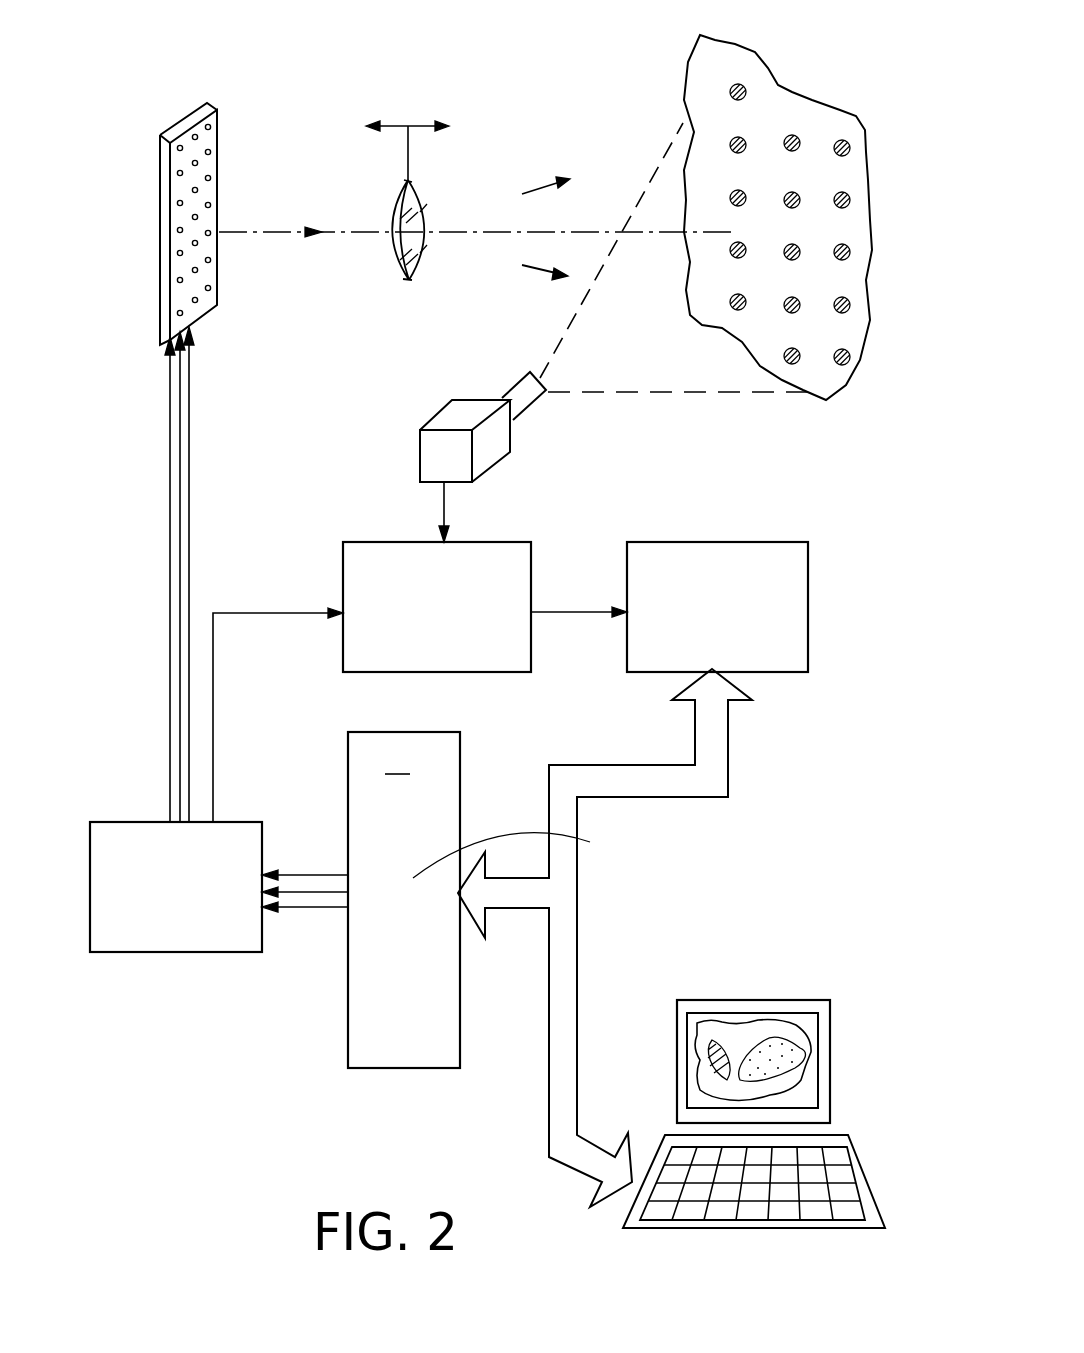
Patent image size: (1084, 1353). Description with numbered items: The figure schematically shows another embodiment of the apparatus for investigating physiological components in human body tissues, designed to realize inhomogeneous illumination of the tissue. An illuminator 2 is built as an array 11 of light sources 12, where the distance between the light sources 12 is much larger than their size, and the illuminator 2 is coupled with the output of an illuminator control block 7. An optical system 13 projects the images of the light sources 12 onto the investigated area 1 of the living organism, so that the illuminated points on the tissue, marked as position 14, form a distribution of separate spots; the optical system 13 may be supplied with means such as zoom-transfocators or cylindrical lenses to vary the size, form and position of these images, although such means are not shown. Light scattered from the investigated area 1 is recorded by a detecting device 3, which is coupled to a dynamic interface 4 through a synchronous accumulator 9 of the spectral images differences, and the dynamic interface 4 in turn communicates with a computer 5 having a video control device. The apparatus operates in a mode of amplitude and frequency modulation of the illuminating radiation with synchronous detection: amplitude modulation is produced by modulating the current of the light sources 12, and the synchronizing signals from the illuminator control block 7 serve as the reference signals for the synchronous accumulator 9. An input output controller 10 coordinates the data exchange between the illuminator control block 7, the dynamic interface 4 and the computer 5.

The investigated area 1 is at (787, 214).
The illuminator 2 is at (164, 186).
The detecting device 3 is at (450, 412).
The dynamic interface board 4 is at (794, 558).
The computer with a video control device 5 is at (832, 1094).
The illuminator control block 7 is at (240, 836).
The synchronous accumulator of the spectral images differences 9 is at (514, 562).
The input output controller 10 is at (521, 938).
The array of light sources 11 is at (187, 130).
The light sources 12 is at (180, 205).
The optical system 13 is at (422, 192).
The illuminated points 14 is at (847, 191).